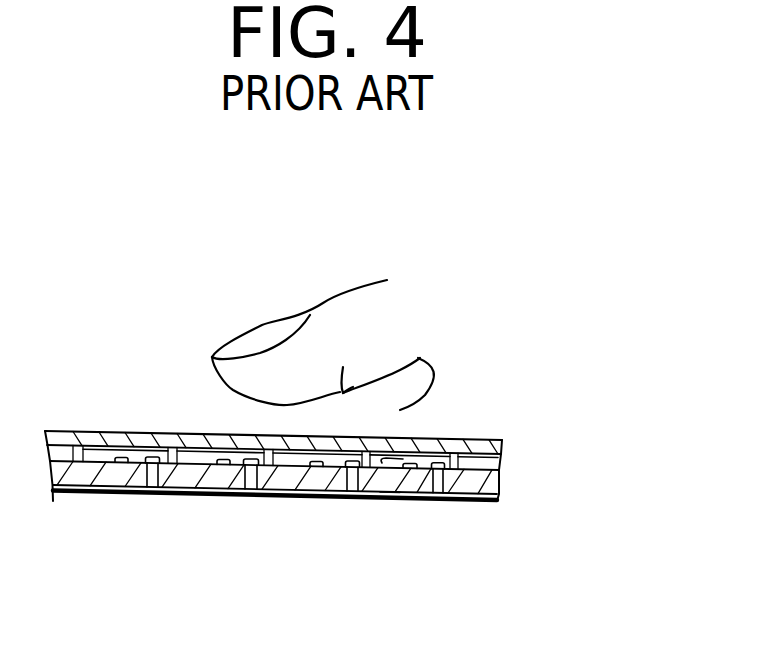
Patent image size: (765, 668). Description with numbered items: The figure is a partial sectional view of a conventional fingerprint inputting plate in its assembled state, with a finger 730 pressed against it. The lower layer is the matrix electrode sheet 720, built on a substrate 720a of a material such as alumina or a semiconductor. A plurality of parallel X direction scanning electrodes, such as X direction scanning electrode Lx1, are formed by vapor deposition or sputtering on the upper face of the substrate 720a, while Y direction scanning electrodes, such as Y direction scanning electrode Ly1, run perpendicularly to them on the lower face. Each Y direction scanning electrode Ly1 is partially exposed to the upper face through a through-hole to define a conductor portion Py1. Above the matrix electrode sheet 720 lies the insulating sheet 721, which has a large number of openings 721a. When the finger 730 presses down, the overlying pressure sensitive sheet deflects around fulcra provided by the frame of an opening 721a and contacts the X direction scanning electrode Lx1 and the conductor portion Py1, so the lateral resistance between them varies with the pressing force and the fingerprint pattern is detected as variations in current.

The finger 730 is at (345, 313).
The insulating sheet 721 is at (98, 432).
The opening 721a is at (417, 437).
The conductor portion Py1 is at (361, 437).
The matrix electrode sheet 720 is at (500, 462).
The substrate 720a is at (185, 475).
The X direction scanning electrode Lx1 is at (318, 462).
The Y direction scanning electrode Ly1 is at (392, 502).